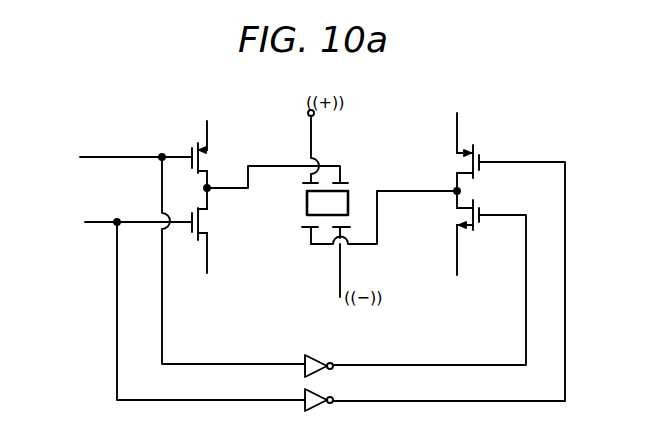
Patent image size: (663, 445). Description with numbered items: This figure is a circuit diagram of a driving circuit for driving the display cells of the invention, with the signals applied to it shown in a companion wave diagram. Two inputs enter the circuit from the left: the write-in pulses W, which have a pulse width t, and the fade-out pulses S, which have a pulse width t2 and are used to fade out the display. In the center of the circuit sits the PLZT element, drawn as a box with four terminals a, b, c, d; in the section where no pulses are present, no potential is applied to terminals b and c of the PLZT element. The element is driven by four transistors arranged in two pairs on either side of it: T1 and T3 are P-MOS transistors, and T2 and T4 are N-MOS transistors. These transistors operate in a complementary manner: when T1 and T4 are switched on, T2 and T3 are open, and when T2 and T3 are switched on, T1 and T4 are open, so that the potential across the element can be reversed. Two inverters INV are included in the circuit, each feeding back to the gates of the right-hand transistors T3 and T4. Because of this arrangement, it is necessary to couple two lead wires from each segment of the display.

The P-MOS transistor T1 is at (211, 145).
The N-MOS transistor T2 is at (212, 243).
The P-MOS transistor T3 is at (474, 144).
The N-MOS transistor T4 is at (478, 242).
The terminal of PLZT element a is at (302, 185).
The terminal of PLZT element b is at (348, 185).
The terminal of PLZT element c is at (301, 231).
The terminal of PLZT element d is at (348, 229).
The inverter INV is at (315, 356).
The write-in pulses W is at (74, 145).
The fade-out pulses S is at (181, 304).